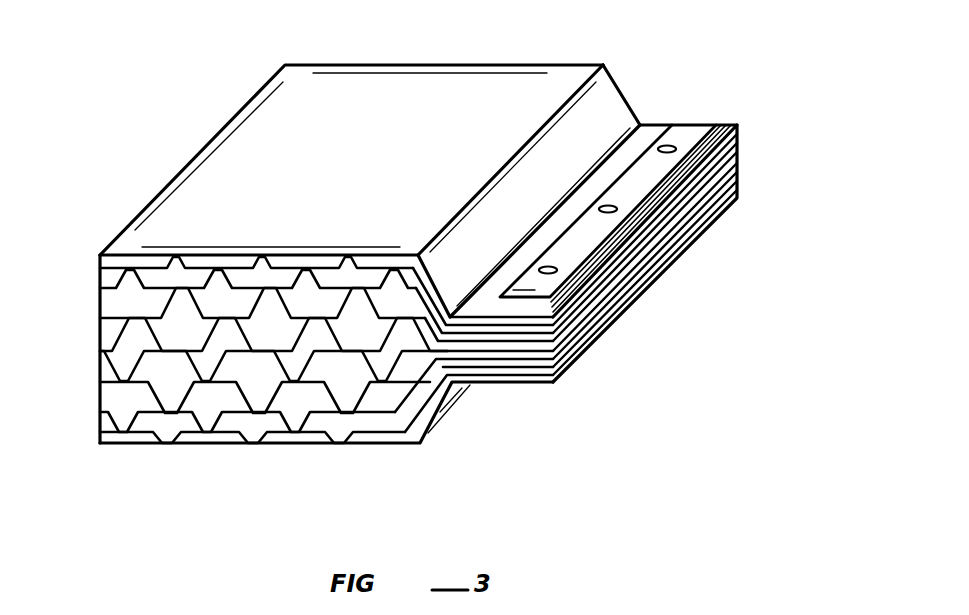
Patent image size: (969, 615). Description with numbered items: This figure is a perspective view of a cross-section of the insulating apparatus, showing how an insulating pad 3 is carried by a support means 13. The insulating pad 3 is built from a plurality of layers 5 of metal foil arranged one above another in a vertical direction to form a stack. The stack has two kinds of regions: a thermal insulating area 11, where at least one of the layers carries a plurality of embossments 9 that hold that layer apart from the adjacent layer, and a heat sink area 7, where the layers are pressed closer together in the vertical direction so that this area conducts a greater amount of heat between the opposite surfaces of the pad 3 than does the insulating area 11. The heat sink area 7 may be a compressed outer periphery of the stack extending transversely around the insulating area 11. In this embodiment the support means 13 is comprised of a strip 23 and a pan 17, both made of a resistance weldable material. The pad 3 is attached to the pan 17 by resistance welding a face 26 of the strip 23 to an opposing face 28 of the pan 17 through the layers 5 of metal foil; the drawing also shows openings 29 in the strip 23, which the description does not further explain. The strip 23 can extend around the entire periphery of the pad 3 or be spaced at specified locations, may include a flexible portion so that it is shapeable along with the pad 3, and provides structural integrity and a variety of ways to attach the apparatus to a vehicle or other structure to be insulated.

The insulating pad 3 is at (438, 66).
The layers of metal foil 5 is at (95, 258).
The heat sink area 7 is at (747, 126).
The embossments 9 is at (177, 303).
The thermal insulating area 11 is at (303, 140).
The support means 13 is at (657, 188).
The pan 17 is at (428, 438).
The strip 23 is at (608, 174).
The face of strip 26 is at (568, 352).
The face of pan 28 is at (528, 378).
The fastener holes 29 is at (663, 142).